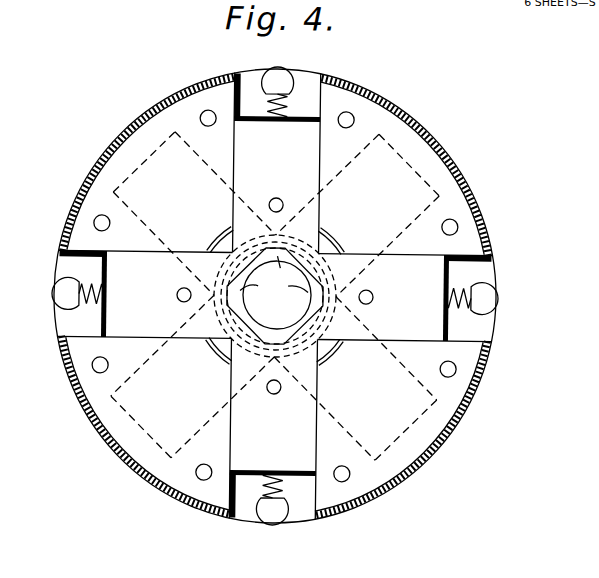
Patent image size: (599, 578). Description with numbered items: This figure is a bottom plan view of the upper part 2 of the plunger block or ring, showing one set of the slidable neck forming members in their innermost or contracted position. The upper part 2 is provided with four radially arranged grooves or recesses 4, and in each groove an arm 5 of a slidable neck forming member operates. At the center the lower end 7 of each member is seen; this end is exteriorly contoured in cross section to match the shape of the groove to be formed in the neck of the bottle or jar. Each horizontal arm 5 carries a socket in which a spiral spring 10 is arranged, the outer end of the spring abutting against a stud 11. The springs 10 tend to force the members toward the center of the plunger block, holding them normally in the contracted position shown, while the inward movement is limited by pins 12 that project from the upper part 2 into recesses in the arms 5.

The upper part of plunger block 2 is at (277, 295).
The radially arranged grooves or recesses 4 is at (278, 302).
The arm of slidable neck forming member 5 is at (274, 295).
The lower end of neck forming member 7 is at (274, 295).
The spiral spring 10 is at (277, 296).
The stud 11 is at (304, 311).
The pin 12 is at (295, 279).